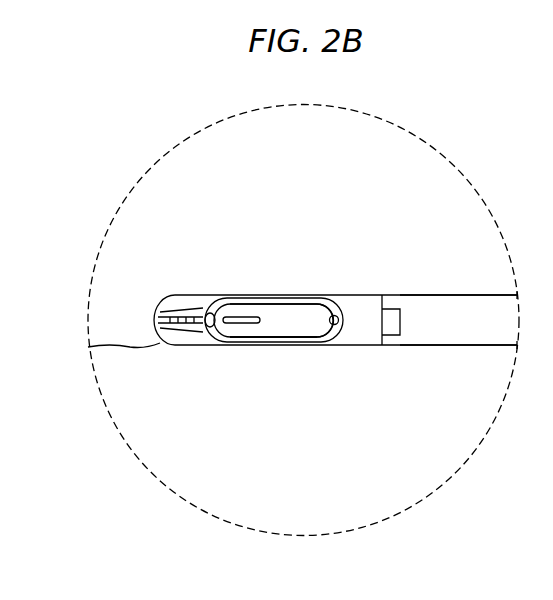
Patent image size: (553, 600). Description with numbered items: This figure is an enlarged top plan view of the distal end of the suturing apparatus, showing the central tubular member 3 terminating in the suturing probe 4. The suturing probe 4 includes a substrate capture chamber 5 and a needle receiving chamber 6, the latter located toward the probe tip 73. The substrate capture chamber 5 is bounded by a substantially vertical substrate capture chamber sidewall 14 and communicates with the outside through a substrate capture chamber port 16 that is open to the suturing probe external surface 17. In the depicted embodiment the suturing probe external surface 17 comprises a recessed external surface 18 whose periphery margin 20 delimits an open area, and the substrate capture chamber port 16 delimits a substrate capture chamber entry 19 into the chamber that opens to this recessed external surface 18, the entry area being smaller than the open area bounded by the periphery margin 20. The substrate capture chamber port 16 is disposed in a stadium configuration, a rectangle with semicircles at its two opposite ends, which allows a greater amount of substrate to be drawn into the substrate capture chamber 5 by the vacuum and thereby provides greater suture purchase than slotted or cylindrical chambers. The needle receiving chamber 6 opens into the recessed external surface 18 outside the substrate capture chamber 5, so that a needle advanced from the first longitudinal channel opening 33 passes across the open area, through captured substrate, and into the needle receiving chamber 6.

The suturing probe 4 is at (231, 163).
The needle receiving chamber 6 is at (186, 285).
The recessed external surface 18 is at (238, 297).
The substrate capture chamber sidewall 14 is at (273, 306).
The suturing probe external surface 17 is at (358, 320).
The central tubular member 3 is at (506, 290).
The probe tip 73 is at (88, 347).
The periphery margin 20 is at (225, 352).
The substrate capture chamber port 16 is at (262, 348).
The substrate capture chamber entry 19 is at (295, 328).
The substrate capture chamber 5 is at (324, 354).
The first longitudinal channel opening 33 is at (338, 334).